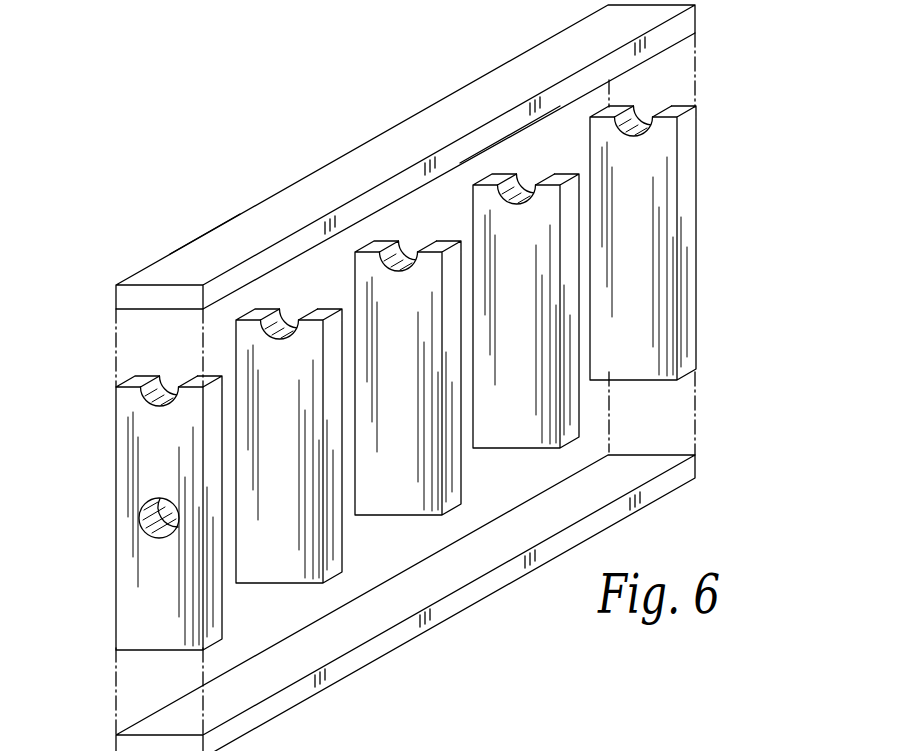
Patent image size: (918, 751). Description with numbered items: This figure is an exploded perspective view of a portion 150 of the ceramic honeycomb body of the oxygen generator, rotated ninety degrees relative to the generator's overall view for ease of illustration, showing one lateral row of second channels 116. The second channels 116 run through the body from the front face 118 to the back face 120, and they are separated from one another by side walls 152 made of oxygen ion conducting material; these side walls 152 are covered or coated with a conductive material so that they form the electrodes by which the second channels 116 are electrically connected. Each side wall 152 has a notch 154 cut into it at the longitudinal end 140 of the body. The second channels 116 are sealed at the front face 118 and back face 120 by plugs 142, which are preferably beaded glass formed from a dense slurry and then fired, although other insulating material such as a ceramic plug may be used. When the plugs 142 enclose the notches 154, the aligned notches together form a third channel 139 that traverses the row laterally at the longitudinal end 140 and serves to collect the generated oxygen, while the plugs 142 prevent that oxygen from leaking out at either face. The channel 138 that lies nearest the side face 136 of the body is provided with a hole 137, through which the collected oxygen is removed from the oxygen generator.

The second channels 116 is at (502, 373).
The front face 118 is at (572, 48).
The back face 120 is at (468, 612).
The side face 136 is at (141, 514).
The hole 137 is at (147, 530).
The channel 138 is at (252, 521).
The third channel 139 is at (510, 138).
The longitudinal end 140 is at (199, 240).
The plugs 142 is at (350, 170).
The portion 150 is at (98, 388).
The side walls 152 is at (407, 407).
The notch 154 is at (276, 320).